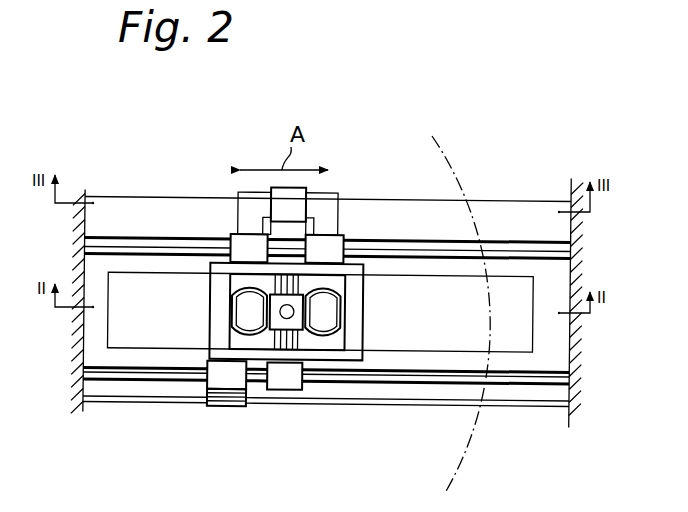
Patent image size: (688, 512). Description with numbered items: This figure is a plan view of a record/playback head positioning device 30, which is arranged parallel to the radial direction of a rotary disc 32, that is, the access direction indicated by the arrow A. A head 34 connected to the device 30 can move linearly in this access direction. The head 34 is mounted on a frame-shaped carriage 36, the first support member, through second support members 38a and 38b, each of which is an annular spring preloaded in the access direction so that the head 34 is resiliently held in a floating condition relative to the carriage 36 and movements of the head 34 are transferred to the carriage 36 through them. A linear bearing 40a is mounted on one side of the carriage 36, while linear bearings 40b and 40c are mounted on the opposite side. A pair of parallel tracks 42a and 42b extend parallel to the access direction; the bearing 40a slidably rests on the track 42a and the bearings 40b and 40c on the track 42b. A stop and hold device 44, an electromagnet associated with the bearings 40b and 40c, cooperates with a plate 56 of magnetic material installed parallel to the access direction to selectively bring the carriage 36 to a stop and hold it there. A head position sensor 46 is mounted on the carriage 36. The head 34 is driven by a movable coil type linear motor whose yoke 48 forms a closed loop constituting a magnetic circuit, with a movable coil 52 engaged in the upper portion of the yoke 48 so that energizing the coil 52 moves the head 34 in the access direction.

The head positioning device 30 is at (137, 170).
The rotary disc 32 is at (457, 152).
The head 34 is at (297, 323).
The carriage 36 is at (215, 332).
The second support member 38a is at (257, 335).
The second support member 38b is at (300, 325).
The linear bearing 40a is at (295, 380).
The linear bearing 40b is at (336, 243).
The linear bearing 40c is at (241, 243).
The track 42a is at (440, 378).
The track 42b is at (433, 245).
The stop and hold device 44 is at (298, 202).
The head position sensor 46 is at (230, 417).
The yoke 48 is at (518, 340).
The movable coil 52 is at (285, 345).
The plate 56 is at (500, 207).